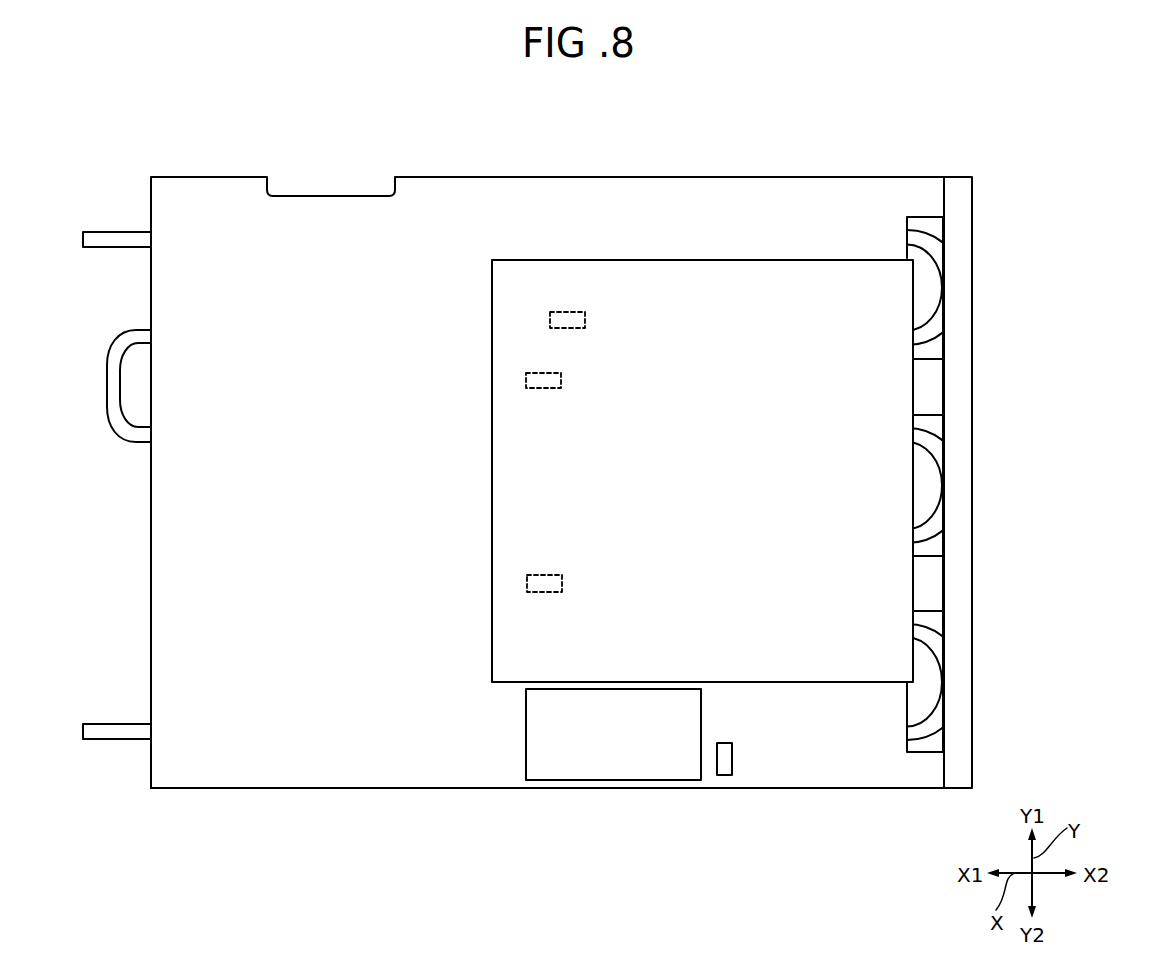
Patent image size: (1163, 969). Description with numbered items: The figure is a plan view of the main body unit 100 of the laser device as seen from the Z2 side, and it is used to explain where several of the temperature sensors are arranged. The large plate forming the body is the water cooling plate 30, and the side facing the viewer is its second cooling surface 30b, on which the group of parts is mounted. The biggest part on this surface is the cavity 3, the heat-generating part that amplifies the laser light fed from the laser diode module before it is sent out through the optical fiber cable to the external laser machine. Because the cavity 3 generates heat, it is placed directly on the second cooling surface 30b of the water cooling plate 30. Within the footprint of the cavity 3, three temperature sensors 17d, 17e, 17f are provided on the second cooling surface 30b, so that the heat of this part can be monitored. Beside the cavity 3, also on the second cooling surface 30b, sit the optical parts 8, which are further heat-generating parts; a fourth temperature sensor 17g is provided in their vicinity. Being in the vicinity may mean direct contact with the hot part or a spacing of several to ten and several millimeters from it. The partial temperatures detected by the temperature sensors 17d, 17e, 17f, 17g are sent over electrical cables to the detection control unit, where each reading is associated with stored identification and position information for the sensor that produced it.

The main body unit 100 is at (1012, 147).
The cavity 3 is at (873, 397).
The water cooling plate 30 is at (361, 773).
The second cooling surface 30b is at (266, 760).
The optical parts 8 is at (598, 777).
The temperature sensor 17d is at (585, 318).
The temperature sensor 17e is at (561, 380).
The temperature sensor 17f is at (562, 582).
The temperature sensor 17g is at (725, 776).